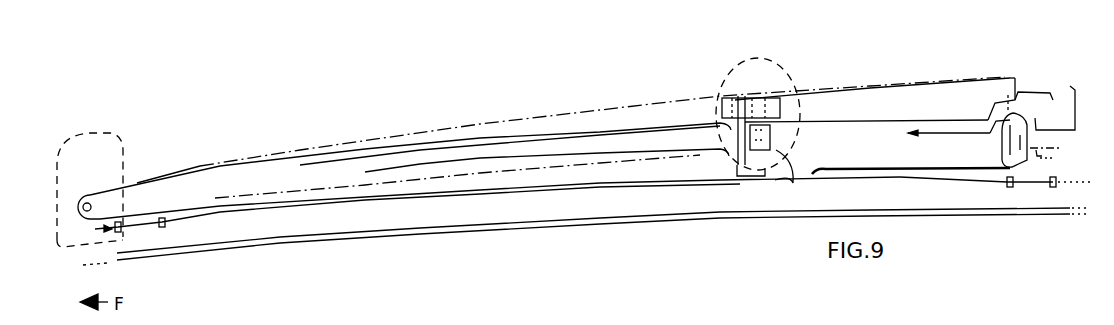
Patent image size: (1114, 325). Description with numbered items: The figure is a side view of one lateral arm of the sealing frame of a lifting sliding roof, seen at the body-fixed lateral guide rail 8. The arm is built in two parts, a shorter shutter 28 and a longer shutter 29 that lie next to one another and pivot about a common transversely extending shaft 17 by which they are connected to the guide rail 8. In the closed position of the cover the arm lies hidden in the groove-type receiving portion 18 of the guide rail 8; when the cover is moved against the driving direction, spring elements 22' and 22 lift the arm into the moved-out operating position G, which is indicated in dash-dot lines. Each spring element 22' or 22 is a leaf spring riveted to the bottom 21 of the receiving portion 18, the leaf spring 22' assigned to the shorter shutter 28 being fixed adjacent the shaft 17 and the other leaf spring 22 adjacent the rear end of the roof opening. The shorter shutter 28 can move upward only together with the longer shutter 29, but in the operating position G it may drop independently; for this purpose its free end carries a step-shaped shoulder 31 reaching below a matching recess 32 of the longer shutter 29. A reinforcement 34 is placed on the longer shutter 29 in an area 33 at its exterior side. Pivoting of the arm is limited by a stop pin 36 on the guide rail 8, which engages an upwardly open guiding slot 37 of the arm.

The transversely extending shaft 17 is at (86, 200).
The lateral guide rail 8 is at (120, 150).
The spring element 22' is at (417, 231).
The shorter shutter 28 is at (663, 173).
The bottom of the receiving portion 21 is at (503, 197).
The stop pin 36 is at (777, 125).
The step-shaped shoulder 31 is at (755, 175).
The recess 32 is at (772, 177).
The guiding slot 37 is at (778, 152).
The exterior side area 33 is at (853, 137).
The longer shutter 29 is at (900, 172).
The reinforcement 34 is at (925, 145).
The spring element 22 is at (995, 214).
The groove-type receiving portion 18 is at (1061, 159).
The moved-out operating position G is at (930, 80).